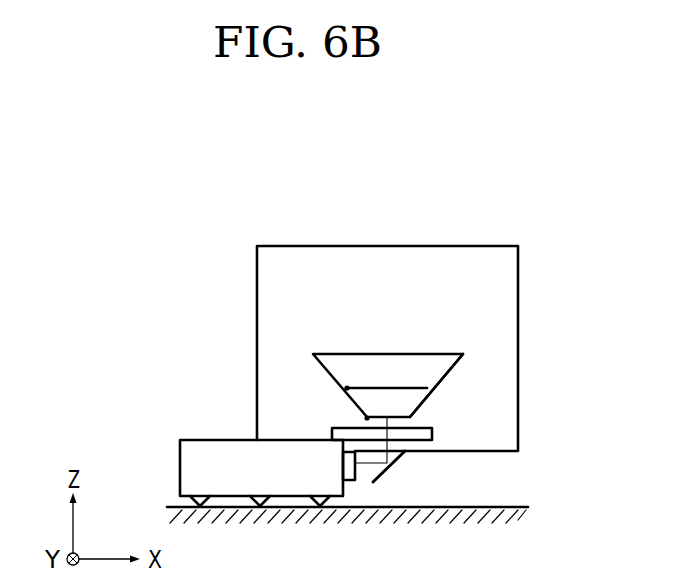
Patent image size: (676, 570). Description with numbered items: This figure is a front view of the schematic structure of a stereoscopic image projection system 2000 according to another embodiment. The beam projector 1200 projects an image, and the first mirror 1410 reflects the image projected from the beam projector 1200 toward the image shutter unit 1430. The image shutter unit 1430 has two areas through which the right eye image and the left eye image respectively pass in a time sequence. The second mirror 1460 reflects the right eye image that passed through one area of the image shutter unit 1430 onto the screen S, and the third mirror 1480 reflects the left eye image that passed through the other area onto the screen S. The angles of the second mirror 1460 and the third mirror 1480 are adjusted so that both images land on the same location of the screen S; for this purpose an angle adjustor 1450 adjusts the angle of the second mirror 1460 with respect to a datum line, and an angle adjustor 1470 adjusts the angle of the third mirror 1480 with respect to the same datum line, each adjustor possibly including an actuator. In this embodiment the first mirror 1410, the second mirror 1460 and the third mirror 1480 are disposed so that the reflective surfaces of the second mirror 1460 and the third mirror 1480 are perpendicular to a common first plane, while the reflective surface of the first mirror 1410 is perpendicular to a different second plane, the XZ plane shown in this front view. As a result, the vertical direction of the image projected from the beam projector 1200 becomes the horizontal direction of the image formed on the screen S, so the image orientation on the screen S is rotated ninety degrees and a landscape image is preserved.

The stereoscopic image projection system 2000 is at (153, 278).
The screen S is at (387, 246).
The beam projector 1200 is at (188, 466).
The first mirror 1410 is at (398, 457).
The image shutter unit 1430 is at (433, 440).
The angle adjustor 1450 is at (365, 417).
The second mirror 1460 is at (413, 400).
The angle adjustor 1470 is at (346, 387).
The third mirror 1480 is at (386, 354).